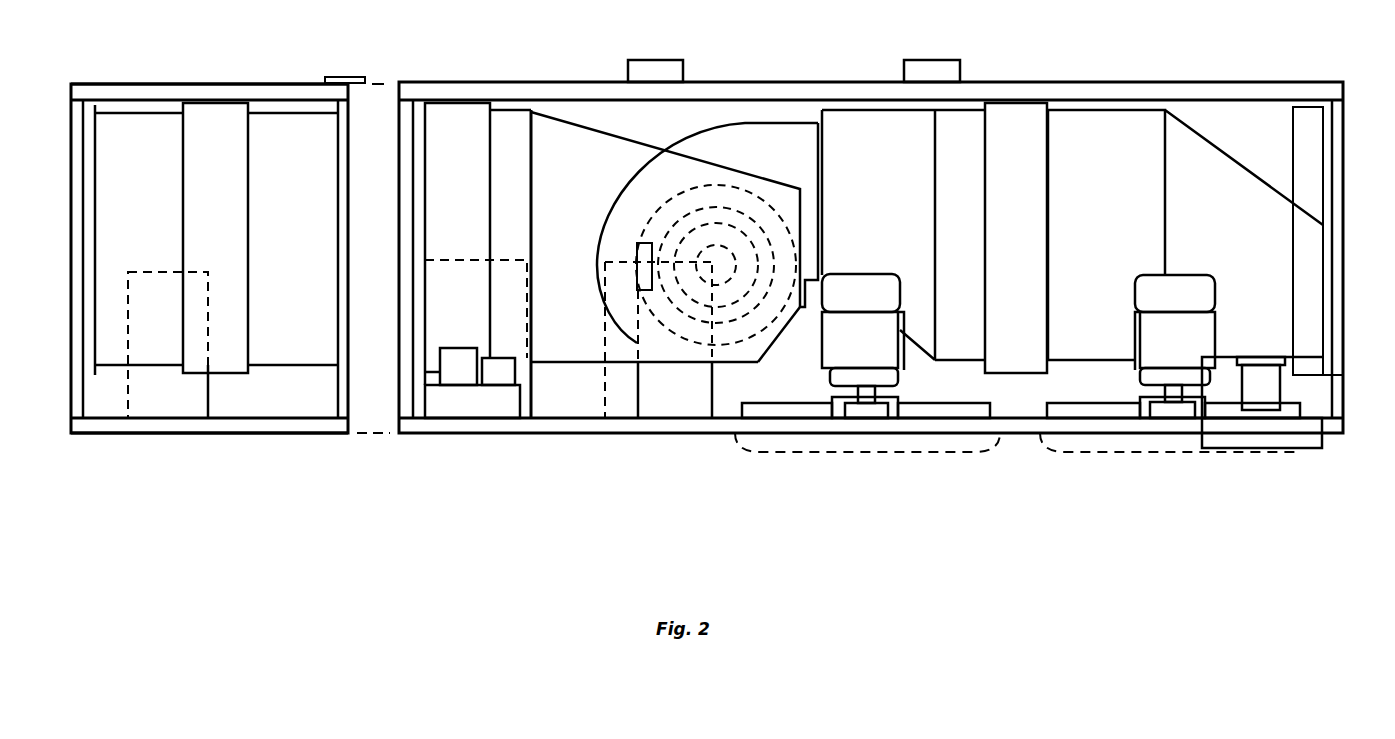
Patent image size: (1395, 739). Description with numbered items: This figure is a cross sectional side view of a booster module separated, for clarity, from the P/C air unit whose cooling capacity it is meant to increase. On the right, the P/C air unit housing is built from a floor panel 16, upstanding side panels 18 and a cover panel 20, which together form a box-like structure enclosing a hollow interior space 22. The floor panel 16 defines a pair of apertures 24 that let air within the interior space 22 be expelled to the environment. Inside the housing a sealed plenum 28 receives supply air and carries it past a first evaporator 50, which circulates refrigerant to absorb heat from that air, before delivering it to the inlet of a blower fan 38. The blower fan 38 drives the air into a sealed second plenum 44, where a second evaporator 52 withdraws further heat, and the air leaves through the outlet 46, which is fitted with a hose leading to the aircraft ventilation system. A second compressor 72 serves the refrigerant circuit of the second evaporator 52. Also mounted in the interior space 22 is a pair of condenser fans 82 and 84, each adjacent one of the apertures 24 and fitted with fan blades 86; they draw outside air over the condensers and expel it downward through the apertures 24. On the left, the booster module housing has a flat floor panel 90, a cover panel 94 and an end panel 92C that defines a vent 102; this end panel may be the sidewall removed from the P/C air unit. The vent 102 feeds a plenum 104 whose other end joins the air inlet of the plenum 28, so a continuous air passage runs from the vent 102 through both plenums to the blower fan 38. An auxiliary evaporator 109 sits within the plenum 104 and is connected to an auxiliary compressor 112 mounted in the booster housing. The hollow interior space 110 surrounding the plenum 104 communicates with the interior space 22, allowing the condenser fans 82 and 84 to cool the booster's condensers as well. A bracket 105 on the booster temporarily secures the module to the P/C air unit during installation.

The floor panel 16 is at (630, 437).
The side panels 18 is at (400, 388).
The cover panel 20 is at (760, 81).
The hollow interior space 22 is at (665, 209).
The apertures 24 is at (807, 436).
The plenum 28 is at (621, 264).
The blower fan 38 is at (791, 236).
The second plenum 44 is at (1185, 235).
The outlet 46 is at (1263, 357).
The first evaporator 50 is at (505, 182).
The second evaporator 52 is at (1016, 238).
The second compressor 72 is at (476, 339).
The condenser fan 82 is at (900, 372).
The condenser fan 84 is at (1150, 337).
The fan blades 86 is at (800, 403).
The floor panel 90 is at (190, 437).
The end panel 92C is at (75, 152).
The cover panel 94 is at (203, 82).
The vent 102 is at (70, 302).
The plenum 104 is at (216, 240).
The bracket 105 is at (340, 77).
The auxiliary evaporator 109 is at (215, 238).
The hollow interior space 110 is at (253, 391).
The auxiliary compressor 112 is at (168, 345).